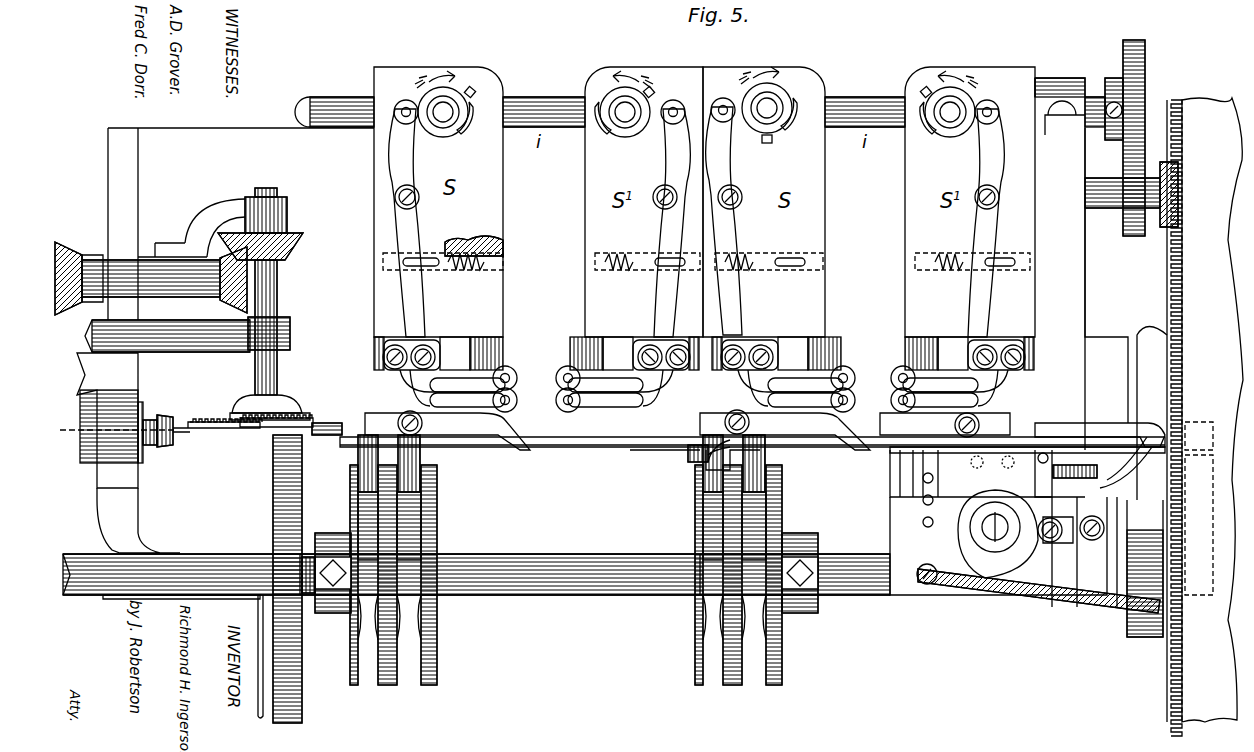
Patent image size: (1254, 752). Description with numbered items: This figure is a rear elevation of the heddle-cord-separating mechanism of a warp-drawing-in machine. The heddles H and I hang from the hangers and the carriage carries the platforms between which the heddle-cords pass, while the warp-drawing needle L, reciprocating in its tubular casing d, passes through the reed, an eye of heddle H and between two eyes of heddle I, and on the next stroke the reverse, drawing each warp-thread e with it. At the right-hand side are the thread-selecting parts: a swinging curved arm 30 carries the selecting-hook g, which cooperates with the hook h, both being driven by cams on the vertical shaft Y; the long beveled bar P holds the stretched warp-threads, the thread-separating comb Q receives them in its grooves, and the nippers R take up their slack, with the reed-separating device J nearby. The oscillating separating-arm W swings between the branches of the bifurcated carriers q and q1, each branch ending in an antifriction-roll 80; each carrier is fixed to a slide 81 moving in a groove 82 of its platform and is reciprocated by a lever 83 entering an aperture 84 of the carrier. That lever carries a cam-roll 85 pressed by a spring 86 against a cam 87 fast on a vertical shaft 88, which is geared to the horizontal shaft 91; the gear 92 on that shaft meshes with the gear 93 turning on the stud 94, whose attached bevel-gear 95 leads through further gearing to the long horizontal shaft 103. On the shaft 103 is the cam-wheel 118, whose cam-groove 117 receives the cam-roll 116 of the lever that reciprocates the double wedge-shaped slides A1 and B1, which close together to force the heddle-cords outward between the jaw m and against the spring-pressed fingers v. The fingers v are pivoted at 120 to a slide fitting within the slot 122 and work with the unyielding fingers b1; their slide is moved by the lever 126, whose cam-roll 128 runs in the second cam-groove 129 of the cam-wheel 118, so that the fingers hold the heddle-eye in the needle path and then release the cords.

The horizontal shaft 91 is at (338, 99).
The cam-roll 85 is at (406, 100).
The vertical shaft 88 is at (443, 100).
The cam 87 is at (462, 135).
The spring 86 is at (458, 244).
The lever 83 is at (412, 270).
The aperture 84 is at (425, 347).
The groove or way 82 is at (507, 368).
The slide 81 is at (705, 354).
The antifriction-roll 80 is at (567, 368).
The gear 92 is at (1145, 85).
The gear 93 is at (1145, 170).
The stud 94 is at (1112, 210).
The bevel-gear 95 is at (1168, 228).
The slot 122 is at (1010, 432).
The pivot 120 is at (660, 450).
The lever 126 is at (360, 440).
The cam-roll 128 is at (365, 478).
The cam-groove 129 is at (375, 518).
The cam-roll 116 is at (420, 478).
The cam-groove 117 is at (415, 540).
The cam-wheel 118 is at (420, 630).
The long horizontal shaft 103 is at (620, 595).
The swinging curved arm 30 is at (1100, 470).
The heddle H is at (545, 372).
The oscillating separating-arm W is at (878, 400).
The heddle I is at (862, 395).
The bifurcated carrier q is at (470, 378).
The bifurcated carrier q1 is at (620, 378).
The double wedge-shaped slide A1 is at (502, 440).
The unyielding finger b1 is at (468, 436).
The spring-pressed finger v is at (588, 437).
The jaw m is at (548, 440).
The double wedge-shaped slide B1 is at (640, 440).
The tubular casing d is at (95, 438).
The reed-separating device J is at (198, 420).
The warp-drawing needle L is at (205, 435).
The thread-separating comb Q is at (1165, 285).
The nippers R is at (1147, 482).
The long bar P is at (1205, 417).
The warp-thread e is at (1150, 432).
The selecting-hook g is at (1140, 437).
The hook h is at (1153, 486).
The vertical shaft Y is at (982, 520).